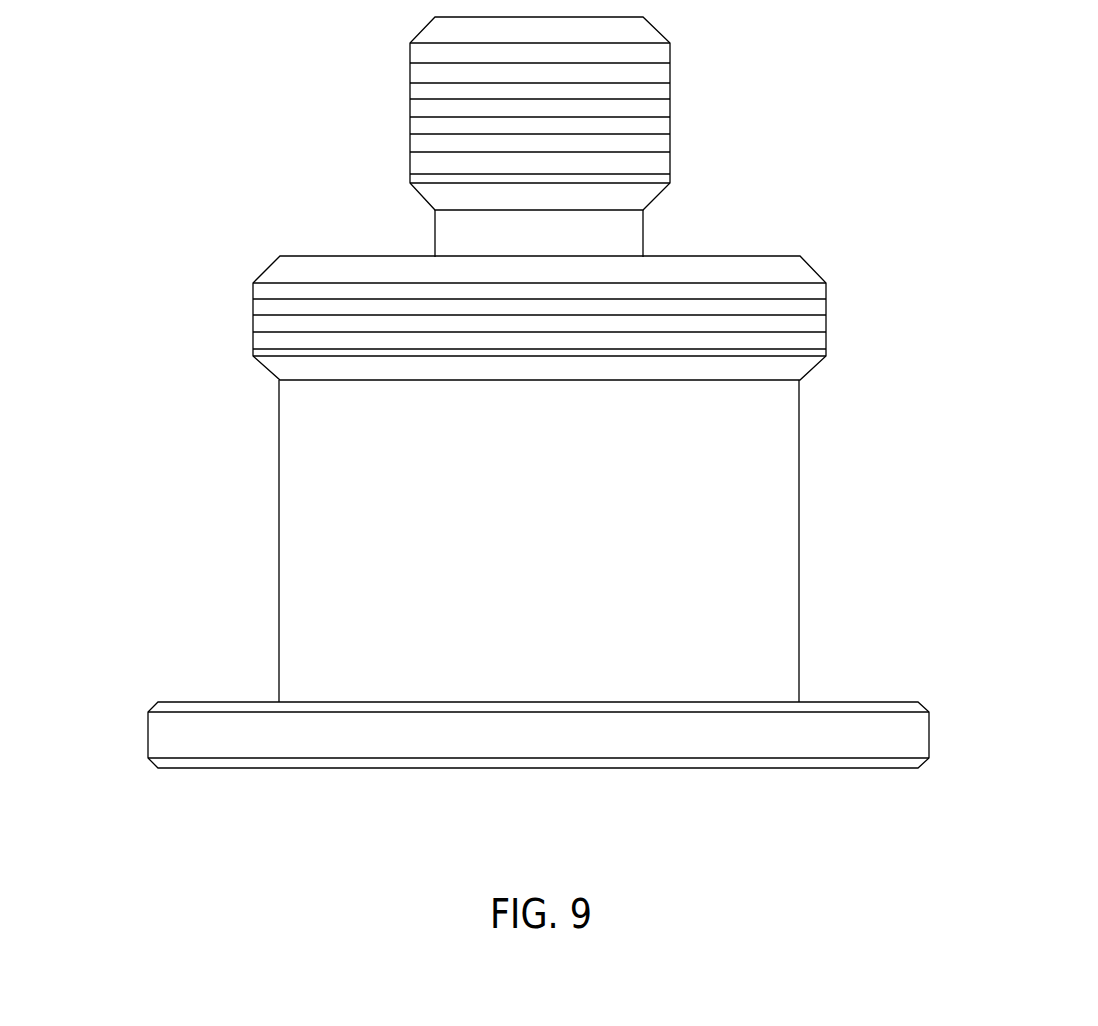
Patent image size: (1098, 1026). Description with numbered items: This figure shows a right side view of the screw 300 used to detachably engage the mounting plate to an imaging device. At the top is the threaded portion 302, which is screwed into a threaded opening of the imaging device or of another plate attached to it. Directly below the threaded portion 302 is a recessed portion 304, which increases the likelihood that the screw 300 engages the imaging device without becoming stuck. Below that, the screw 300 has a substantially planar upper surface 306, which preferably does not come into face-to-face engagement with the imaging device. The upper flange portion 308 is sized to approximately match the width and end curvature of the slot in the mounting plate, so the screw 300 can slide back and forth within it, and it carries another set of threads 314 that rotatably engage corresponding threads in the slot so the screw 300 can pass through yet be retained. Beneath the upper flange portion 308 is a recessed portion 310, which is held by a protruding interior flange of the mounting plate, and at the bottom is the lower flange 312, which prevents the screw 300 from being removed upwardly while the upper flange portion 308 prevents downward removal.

The screw 300 is at (915, 147).
The threaded portion 302 is at (670, 152).
The recessed portion 304 is at (645, 240).
The upper surface 306 is at (402, 252).
The upper flange portion 308 is at (544, 275).
The recessed portion 310 is at (798, 555).
The lower flange 312 is at (855, 733).
The threads 314 is at (323, 312).